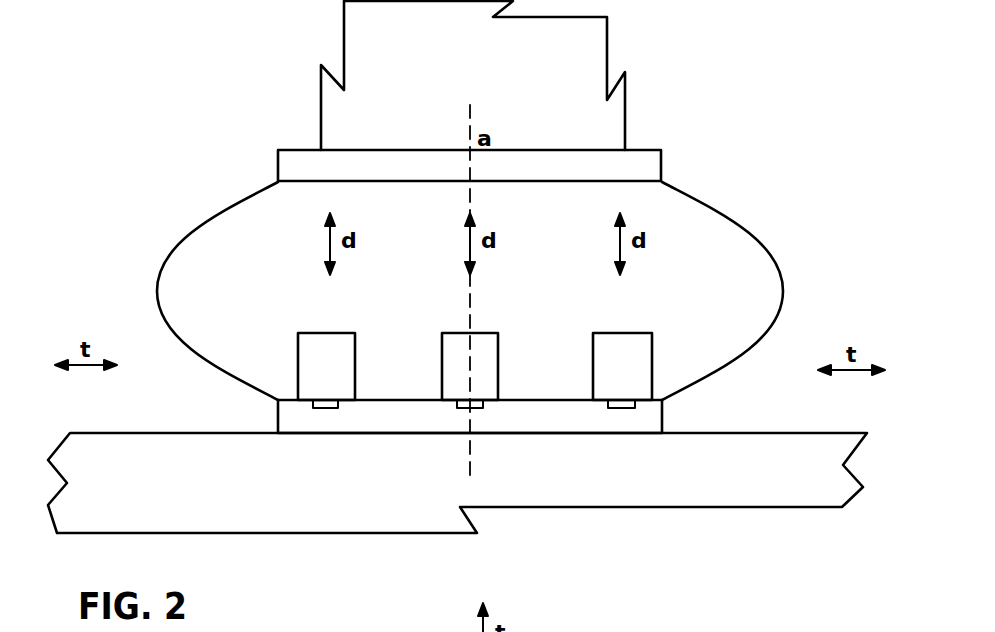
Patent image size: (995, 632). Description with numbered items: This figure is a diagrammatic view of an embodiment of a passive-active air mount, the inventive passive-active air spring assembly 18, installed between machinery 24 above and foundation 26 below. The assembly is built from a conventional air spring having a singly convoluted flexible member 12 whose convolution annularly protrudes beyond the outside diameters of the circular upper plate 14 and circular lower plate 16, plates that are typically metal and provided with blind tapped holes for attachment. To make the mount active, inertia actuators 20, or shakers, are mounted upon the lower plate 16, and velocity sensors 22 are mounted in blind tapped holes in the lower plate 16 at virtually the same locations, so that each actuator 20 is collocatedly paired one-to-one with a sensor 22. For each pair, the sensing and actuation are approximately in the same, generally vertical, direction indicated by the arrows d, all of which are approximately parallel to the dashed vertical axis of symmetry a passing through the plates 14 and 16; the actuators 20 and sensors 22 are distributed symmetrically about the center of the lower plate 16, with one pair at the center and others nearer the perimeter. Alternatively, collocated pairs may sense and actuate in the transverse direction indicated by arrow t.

The singly convoluted flexible member 12 is at (182, 287).
The circular upper plate 14 is at (292, 165).
The circular lower plate 16 is at (295, 418).
The passive-active air spring assembly 18 is at (450, 242).
The inertia actuators 20 is at (322, 345).
The velocity sensors 22 is at (345, 408).
The machinery 24 is at (577, 60).
The foundation 26 is at (728, 480).